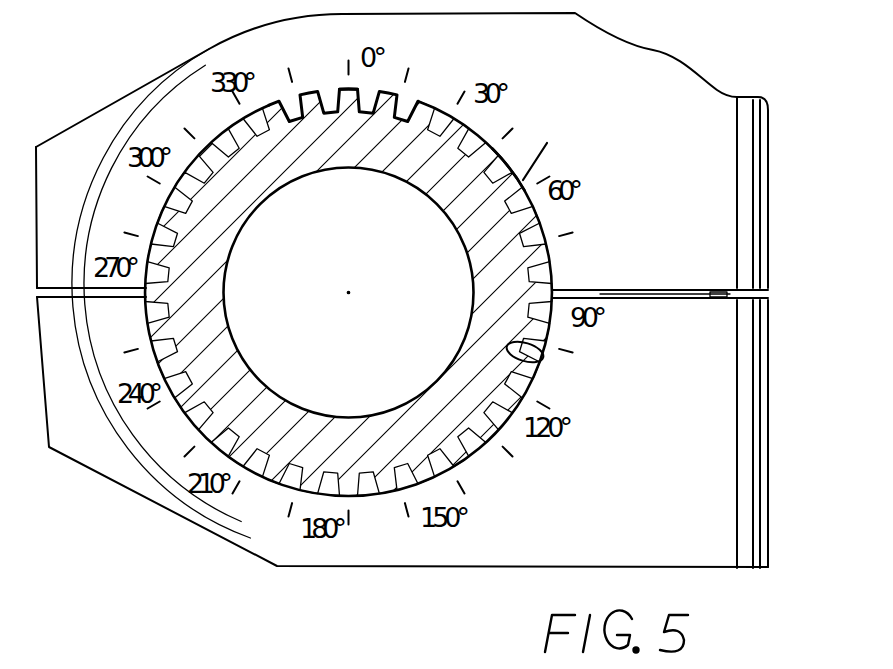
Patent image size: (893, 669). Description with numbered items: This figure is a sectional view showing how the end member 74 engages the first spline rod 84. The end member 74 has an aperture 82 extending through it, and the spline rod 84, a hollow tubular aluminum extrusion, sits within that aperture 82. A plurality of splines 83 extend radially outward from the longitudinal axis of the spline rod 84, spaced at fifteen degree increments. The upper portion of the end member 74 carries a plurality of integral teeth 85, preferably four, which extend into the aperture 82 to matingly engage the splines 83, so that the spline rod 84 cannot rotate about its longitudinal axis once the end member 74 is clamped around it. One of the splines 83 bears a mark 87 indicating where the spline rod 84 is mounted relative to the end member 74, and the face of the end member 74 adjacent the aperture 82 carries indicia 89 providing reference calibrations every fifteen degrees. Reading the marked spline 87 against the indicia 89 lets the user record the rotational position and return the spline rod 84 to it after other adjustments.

The end member 74 is at (713, 107).
The aperture 82 is at (543, 363).
The splines 83 is at (493, 150).
The first spline rod 84 is at (204, 421).
The teeth 85 is at (292, 108).
The mark 87 is at (340, 90).
The indicia 89 is at (138, 138).